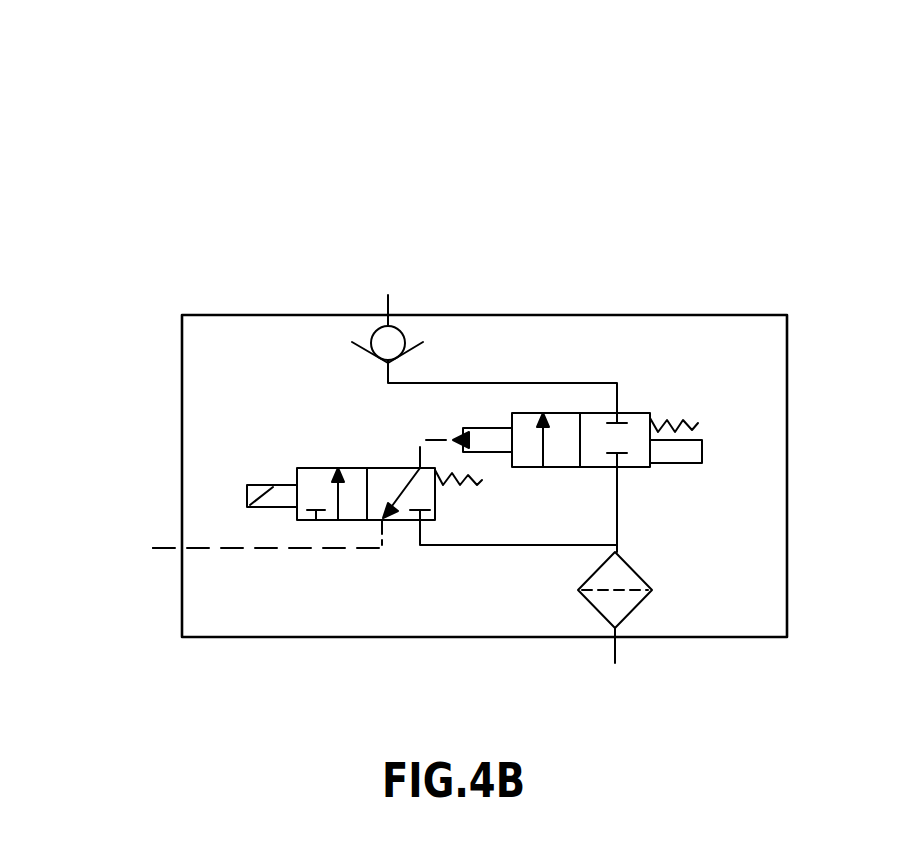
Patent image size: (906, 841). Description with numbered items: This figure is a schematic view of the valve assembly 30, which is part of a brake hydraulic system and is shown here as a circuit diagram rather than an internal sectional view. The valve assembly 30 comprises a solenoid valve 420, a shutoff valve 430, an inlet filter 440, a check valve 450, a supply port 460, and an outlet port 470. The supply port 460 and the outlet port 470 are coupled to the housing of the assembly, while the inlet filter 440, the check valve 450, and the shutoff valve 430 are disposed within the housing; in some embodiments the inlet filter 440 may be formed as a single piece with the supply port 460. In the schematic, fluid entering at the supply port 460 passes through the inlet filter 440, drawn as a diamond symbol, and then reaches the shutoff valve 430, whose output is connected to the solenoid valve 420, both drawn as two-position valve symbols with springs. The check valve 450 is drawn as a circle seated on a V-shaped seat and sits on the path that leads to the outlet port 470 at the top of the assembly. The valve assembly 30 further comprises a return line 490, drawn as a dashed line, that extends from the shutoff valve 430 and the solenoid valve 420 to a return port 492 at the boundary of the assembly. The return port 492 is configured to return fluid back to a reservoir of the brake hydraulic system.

The valve assembly 30 is at (412, 126).
The solenoid valve 420 is at (378, 475).
The shutoff valve 430 is at (635, 413).
The inlet filter 440 is at (620, 578).
The check valve 450 is at (392, 343).
The supply port 460 is at (615, 643).
The outlet port 470 is at (388, 316).
The return line 490 is at (228, 548).
The return port 492 is at (178, 547).